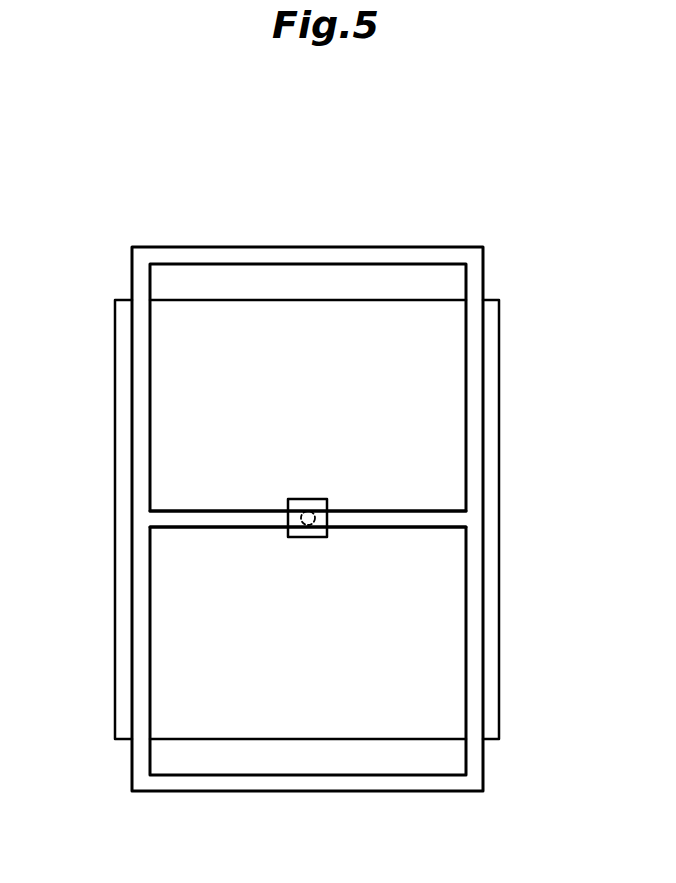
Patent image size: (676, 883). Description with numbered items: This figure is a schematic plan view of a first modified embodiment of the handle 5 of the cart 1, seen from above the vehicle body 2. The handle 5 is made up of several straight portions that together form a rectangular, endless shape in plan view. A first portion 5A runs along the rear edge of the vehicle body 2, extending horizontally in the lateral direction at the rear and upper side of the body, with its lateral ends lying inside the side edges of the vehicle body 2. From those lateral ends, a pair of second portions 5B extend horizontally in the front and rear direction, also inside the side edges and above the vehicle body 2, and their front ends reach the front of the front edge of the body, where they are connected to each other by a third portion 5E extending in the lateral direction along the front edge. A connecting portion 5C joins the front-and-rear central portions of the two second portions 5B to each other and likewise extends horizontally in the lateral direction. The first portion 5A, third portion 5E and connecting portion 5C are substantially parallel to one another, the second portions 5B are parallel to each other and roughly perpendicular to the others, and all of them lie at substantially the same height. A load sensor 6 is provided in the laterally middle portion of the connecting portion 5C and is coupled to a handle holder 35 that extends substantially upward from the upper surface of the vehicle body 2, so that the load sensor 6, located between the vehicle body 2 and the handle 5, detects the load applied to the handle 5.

The cart 1 is at (409, 205).
The vehicle body 2 is at (123, 310).
The handle 5 is at (395, 805).
The first portion 5A is at (297, 786).
The second portions 5B is at (137, 507).
The connecting portion 5C is at (415, 520).
The third portion 5E is at (277, 257).
The load sensor 6 is at (320, 500).
The handle holder 35 is at (305, 512).